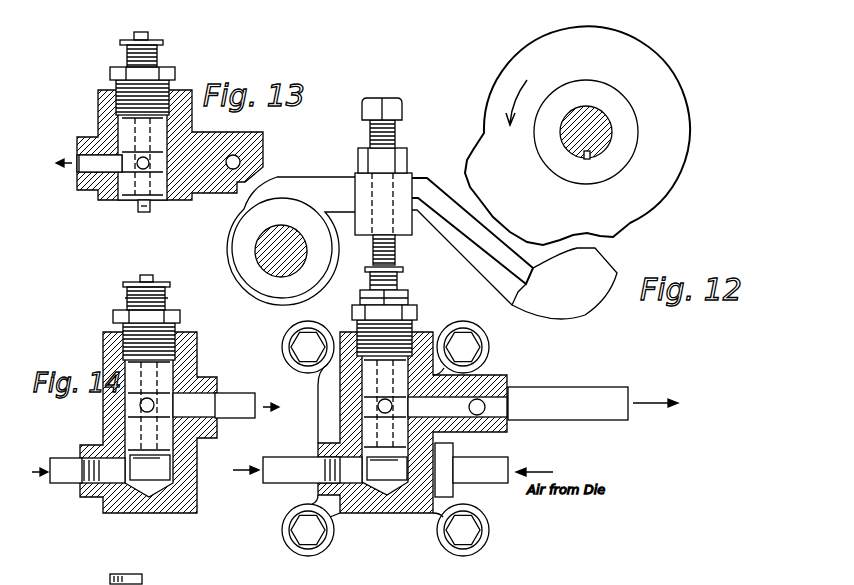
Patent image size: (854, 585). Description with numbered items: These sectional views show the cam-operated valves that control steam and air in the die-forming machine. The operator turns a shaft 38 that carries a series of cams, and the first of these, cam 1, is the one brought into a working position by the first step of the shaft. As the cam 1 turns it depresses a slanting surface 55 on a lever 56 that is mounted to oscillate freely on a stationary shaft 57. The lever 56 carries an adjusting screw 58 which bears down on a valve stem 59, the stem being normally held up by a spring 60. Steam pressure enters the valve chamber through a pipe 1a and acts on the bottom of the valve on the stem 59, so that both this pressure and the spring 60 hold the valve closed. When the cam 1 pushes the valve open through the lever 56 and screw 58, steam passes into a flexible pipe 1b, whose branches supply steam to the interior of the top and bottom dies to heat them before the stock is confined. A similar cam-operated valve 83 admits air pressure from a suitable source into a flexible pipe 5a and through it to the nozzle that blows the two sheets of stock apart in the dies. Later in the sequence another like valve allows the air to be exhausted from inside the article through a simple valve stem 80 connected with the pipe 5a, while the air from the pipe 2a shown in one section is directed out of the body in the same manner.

In FIG. 12, the cam 1 is at (675, 107).
In FIG. 12, the shaft 38 is at (612, 133).
In FIG. 12, the slanting surface 55 is at (595, 256).
In FIG. 12, the lever 56 is at (450, 177).
In FIG. 12, the stationary shaft 57 is at (272, 233).
In FIG. 12, the adjusting screw 58 is at (395, 130).
In FIG. 14, the valve stem 59 is at (110, 577).
In FIG. 12, the valve stem 59 is at (387, 471).
In FIG. 12, the spring 60 is at (410, 282).
In FIG. 12, the pipe 1a is at (302, 452).
In FIG. 12, the pipe 1b is at (580, 383).
In FIG. 13, the valve stem 80 is at (143, 215).
In FIG. 13, the pipe 2a is at (75, 172).
In FIG. 14, the valve 83 is at (150, 471).
In FIG. 14, the pipe 5a is at (236, 396).